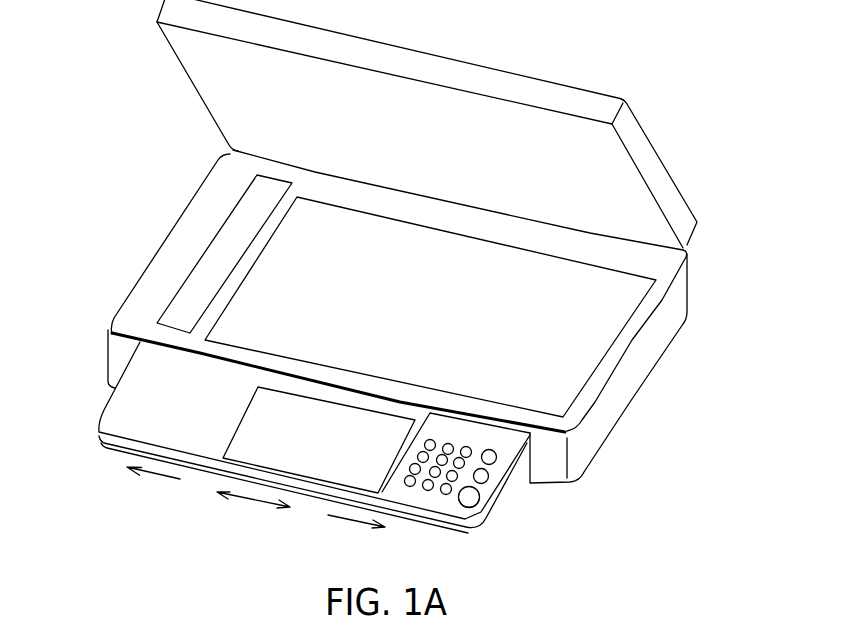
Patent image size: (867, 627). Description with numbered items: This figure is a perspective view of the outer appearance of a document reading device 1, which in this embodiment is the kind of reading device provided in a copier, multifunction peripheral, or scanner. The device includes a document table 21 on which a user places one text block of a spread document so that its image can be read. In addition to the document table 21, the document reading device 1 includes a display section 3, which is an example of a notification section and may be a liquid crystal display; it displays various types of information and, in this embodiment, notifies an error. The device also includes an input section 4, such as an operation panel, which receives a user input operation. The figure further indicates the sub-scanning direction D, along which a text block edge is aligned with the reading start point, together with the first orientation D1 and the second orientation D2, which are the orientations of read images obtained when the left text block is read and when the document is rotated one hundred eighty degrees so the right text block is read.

The document reading device 1 is at (378, 266).
The document table 21 is at (568, 343).
The display section 3 is at (257, 430).
The input section 4 is at (478, 486).
The first orientation D1 is at (152, 474).
The sub-scanning direction D is at (250, 497).
The second orientation D2 is at (345, 523).